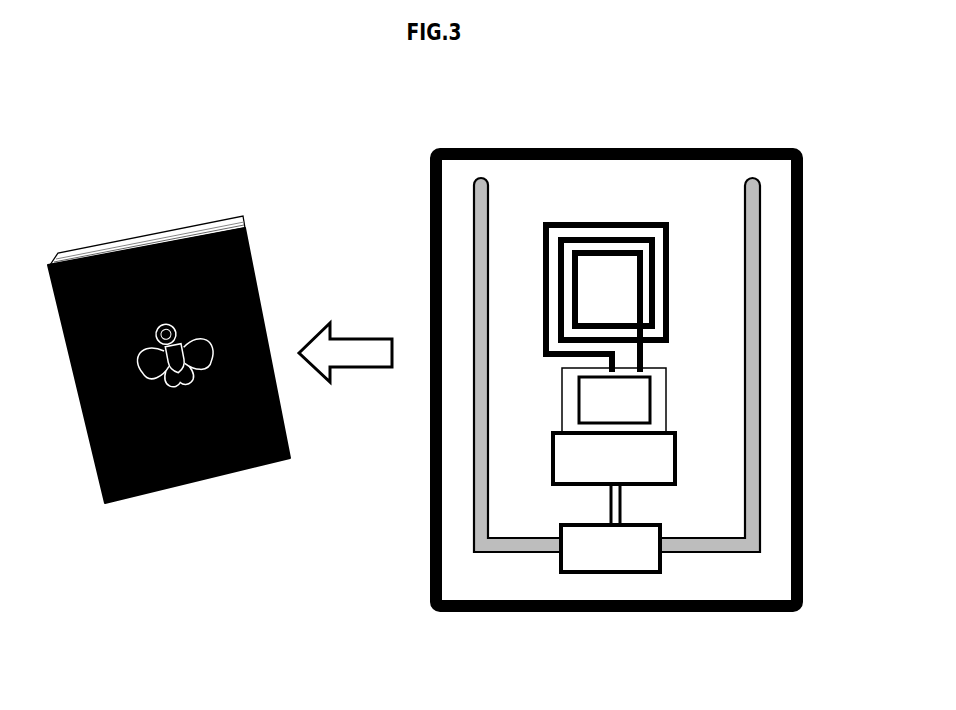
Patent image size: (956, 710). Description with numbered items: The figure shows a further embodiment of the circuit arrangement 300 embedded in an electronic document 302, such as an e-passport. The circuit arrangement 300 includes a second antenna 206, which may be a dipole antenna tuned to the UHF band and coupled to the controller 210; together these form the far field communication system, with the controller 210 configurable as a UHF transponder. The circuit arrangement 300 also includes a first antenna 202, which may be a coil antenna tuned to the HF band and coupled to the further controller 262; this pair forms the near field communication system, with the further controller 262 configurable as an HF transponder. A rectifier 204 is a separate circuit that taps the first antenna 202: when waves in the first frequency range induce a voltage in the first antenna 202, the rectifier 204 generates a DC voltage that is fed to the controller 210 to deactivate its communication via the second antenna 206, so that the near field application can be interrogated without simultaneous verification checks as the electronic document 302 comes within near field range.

The circuit arrangement 300 is at (792, 140).
The first antenna 202 is at (622, 215).
The rectifier 204 is at (614, 479).
The second antenna 206 is at (488, 428).
The controller 210 is at (610, 548).
The further controller 262 is at (614, 401).
The electronic document 302 is at (88, 235).